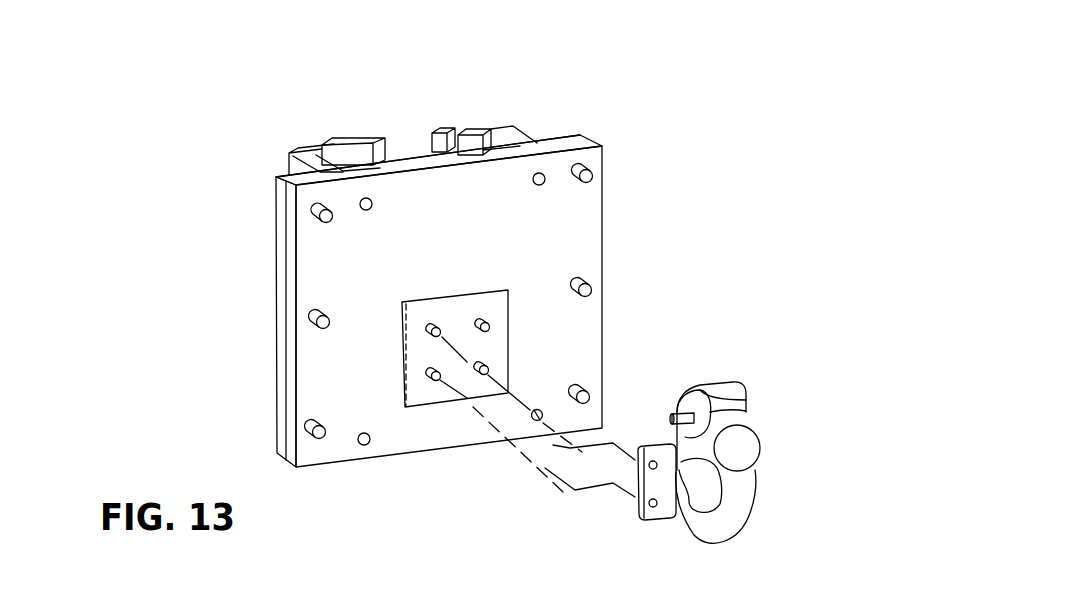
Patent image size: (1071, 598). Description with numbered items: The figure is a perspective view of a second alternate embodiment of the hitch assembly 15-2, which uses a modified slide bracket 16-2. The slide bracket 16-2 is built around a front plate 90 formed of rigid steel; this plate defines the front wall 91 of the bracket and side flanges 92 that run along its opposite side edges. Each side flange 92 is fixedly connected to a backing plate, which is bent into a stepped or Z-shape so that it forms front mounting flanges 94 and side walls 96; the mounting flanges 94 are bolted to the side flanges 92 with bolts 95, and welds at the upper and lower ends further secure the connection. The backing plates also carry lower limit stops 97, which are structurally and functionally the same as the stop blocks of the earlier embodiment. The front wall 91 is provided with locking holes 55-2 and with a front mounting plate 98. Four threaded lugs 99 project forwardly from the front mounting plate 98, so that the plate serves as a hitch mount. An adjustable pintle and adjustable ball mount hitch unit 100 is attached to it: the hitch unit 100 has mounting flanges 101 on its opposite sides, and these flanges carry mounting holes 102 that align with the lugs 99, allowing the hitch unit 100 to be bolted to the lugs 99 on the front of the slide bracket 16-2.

The hitch assembly 15-2 is at (198, 133).
The slide bracket 16-2 is at (587, 82).
The front plate 90 is at (402, 172).
The front wall 91 is at (513, 197).
The side flanges 92 is at (327, 282).
The front mounting flanges 94 is at (277, 177).
The bolts 95 is at (316, 208).
The side walls 96 is at (290, 154).
The lower limit stops 97 is at (370, 141).
The front mounting plate 98 is at (443, 396).
The threaded lugs 99 is at (433, 328).
The locking holes 55-2 is at (362, 210).
The hitch unit 100 is at (774, 400).
The mounting flanges 101 is at (665, 510).
The mounting holes 102 is at (653, 507).